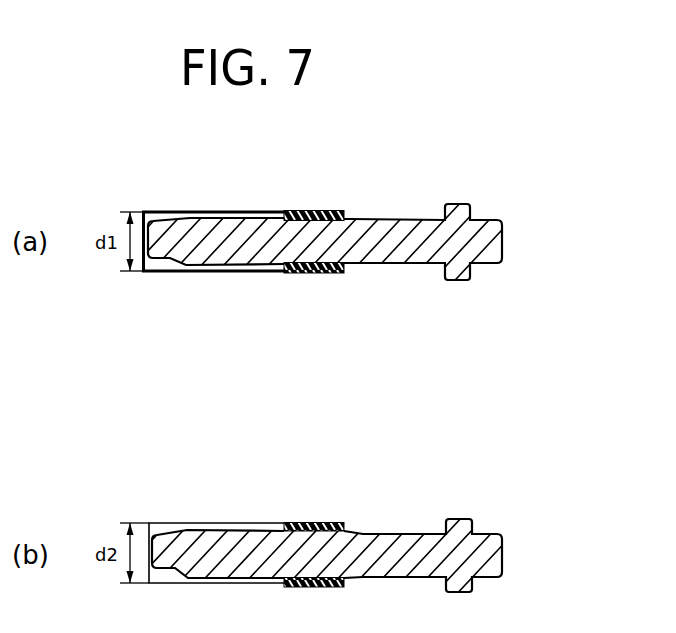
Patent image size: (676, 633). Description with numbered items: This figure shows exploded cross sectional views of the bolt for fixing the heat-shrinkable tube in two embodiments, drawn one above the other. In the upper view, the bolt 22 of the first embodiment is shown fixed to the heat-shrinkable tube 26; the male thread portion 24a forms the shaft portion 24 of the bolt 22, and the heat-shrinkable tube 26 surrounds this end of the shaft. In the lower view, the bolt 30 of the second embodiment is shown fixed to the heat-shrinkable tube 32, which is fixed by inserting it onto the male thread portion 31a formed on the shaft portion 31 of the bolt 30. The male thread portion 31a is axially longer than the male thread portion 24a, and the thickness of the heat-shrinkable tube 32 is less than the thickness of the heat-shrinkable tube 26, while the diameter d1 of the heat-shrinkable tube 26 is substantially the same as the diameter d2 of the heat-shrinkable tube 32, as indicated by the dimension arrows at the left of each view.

The bolt 22 is at (408, 205).
The shaft portion 24 is at (162, 228).
The male thread portion 24a is at (225, 217).
The heat-shrinkable tube 26 is at (312, 211).
The bolt 30 is at (403, 518).
The shaft portion 31 is at (157, 538).
The male thread portion 31a is at (219, 530).
The heat-shrinkable tube 32 is at (313, 522).